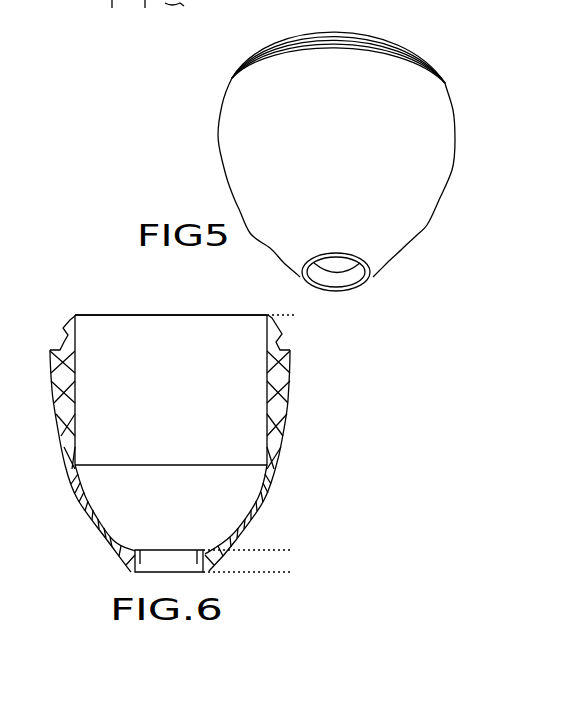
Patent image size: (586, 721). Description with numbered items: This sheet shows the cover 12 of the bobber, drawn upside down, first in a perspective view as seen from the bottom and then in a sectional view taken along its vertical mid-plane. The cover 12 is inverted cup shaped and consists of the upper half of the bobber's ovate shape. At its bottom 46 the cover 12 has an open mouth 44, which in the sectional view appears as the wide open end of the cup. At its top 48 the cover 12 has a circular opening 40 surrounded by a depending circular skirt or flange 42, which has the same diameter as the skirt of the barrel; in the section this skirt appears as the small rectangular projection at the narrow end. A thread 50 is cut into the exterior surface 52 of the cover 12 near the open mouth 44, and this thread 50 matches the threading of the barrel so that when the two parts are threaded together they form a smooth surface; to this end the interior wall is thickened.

In FIG. 5, the cover 12 is at (218, 146).
In FIG. 6, the cover 12 is at (283, 425).
In FIG. 5, the circular opening 40 is at (362, 279).
In FIG. 6, the circular opening 40 is at (200, 572).
In FIG. 5, the depending circular skirt or flange 42 is at (339, 280).
In FIG. 6, the depending circular skirt or flange 42 is at (148, 551).
In FIG. 6, the open mouth 44 is at (127, 318).
In FIG. 6, the bottom 46 is at (73, 315).
In FIG. 5, the top 48 is at (315, 278).
In FIG. 5, the thread 50 is at (314, 33).
In FIG. 5, the exterior surface 52 is at (262, 70).